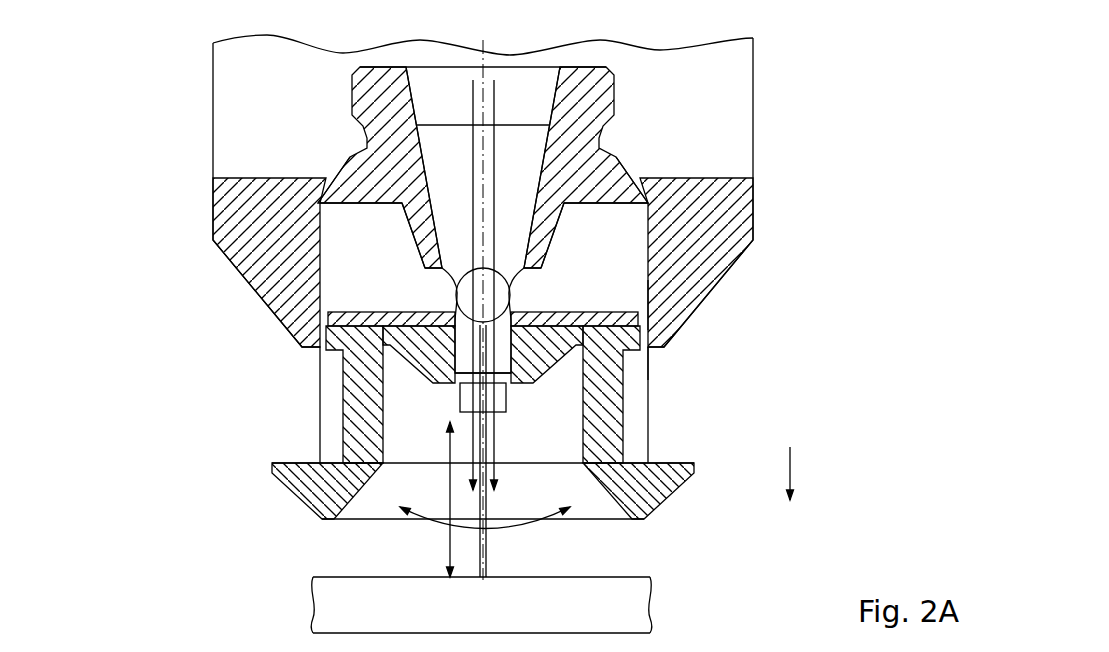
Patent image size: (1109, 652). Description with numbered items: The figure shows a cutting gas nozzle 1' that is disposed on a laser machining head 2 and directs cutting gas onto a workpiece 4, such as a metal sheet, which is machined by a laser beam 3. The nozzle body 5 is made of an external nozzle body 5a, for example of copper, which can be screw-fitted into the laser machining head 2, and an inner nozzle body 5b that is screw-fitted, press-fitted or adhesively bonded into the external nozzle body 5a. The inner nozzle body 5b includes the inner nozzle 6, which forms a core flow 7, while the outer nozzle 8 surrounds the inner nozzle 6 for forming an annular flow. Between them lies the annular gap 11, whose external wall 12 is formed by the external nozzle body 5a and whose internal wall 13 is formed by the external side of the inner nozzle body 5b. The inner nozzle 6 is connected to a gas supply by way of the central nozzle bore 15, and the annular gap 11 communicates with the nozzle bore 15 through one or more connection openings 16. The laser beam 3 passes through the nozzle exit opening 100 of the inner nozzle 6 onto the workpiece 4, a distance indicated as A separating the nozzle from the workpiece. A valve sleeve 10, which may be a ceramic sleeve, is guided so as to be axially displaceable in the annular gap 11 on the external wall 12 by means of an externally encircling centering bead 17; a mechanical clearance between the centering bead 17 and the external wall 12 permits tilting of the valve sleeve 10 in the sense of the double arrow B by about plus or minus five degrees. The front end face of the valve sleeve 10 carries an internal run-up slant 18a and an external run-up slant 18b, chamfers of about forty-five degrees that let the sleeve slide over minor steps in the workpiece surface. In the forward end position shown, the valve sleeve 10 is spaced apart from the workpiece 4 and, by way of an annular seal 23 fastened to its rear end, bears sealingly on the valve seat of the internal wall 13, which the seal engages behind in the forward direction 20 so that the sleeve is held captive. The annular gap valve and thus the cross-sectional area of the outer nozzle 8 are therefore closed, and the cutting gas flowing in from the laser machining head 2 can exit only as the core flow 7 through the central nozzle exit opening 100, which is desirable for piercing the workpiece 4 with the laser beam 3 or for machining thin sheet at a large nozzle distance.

The cutting gas nozzle 1' is at (133, 263).
The laser machining head 2 is at (710, 84).
The laser beam 3 is at (487, 553).
The workpiece 4 is at (626, 607).
The nozzle body 5 is at (648, 169).
The external nozzle body 5a is at (530, 297).
The inner nozzle body 5b is at (551, 229).
The inner nozzle 6 is at (445, 402).
The core flow 7 is at (498, 452).
The outer nozzle 8 is at (398, 358).
The valve sleeve 10 is at (357, 430).
The annular gap 11 is at (340, 264).
The external wall 12 is at (347, 210).
The internal wall 13 is at (571, 268).
The central nozzle bore 15 is at (541, 117).
The connection opening 16 is at (652, 312).
The centering bead 17 is at (650, 362).
The run-up slant 18a is at (353, 493).
The run-up slant 18b is at (290, 502).
The forward direction 20 is at (798, 477).
The annular seal 23 is at (398, 334).
The nozzle exit opening 100 is at (498, 400).
The distance A is at (441, 499).
The double arrow B is at (443, 530).